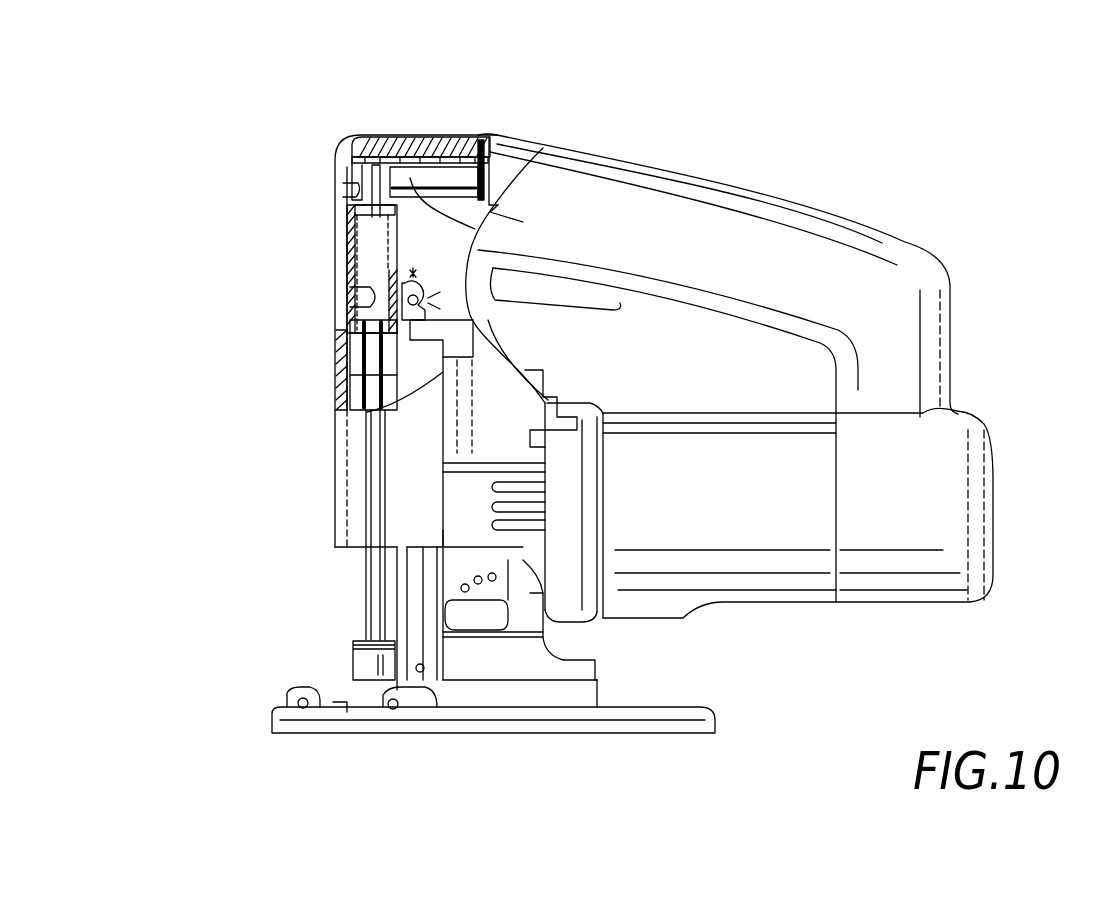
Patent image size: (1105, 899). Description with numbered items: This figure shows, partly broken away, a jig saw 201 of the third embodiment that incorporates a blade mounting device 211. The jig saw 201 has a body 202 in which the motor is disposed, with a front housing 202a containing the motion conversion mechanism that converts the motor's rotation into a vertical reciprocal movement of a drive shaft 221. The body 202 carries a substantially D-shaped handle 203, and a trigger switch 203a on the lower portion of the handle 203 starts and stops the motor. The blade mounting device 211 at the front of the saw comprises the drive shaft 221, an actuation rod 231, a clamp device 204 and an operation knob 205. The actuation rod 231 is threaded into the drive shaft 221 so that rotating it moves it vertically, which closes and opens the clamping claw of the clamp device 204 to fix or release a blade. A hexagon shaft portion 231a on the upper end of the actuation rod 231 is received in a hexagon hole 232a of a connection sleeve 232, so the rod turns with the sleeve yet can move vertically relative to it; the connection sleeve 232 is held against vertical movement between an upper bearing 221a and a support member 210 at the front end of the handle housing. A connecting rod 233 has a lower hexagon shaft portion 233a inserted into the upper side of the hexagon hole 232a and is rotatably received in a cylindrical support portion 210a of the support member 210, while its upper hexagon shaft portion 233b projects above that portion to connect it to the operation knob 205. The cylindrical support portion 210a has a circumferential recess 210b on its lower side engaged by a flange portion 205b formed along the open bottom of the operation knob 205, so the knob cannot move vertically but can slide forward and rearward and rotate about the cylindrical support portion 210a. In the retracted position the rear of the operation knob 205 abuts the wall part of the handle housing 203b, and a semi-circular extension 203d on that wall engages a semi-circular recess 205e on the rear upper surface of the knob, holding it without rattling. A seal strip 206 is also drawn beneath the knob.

The jig saw 201 is at (668, 140).
The body 202 is at (747, 537).
The front housing 202a is at (370, 482).
The handle 203 is at (722, 218).
The trigger switch 203a is at (560, 310).
The wall part of the handle housing 203b is at (486, 160).
The semi-circular extension 203d is at (490, 137).
The clamp device 204 is at (363, 662).
The operation knob 205 is at (366, 135).
The flange portion 205b is at (340, 192).
The semi-circular recess 205e is at (478, 135).
The seal strip 206 is at (402, 152).
The support member 210 is at (543, 148).
The cylindrical support portion 210a is at (436, 140).
The circumferential recess 210b is at (468, 205).
The blade mounting device 211 is at (345, 320).
The drive shaft 221 is at (340, 410).
The upper bearing 221a is at (375, 366).
The actuation rod 231 is at (370, 380).
The hexagon shaft portion 231a is at (365, 337).
The connection sleeve 232 is at (358, 255).
The hexagon hole 232a is at (356, 284).
The connecting rod 233 is at (340, 180).
The hexagon shaft portion 233a is at (355, 216).
The hexagon shaft portion 233b is at (355, 142).